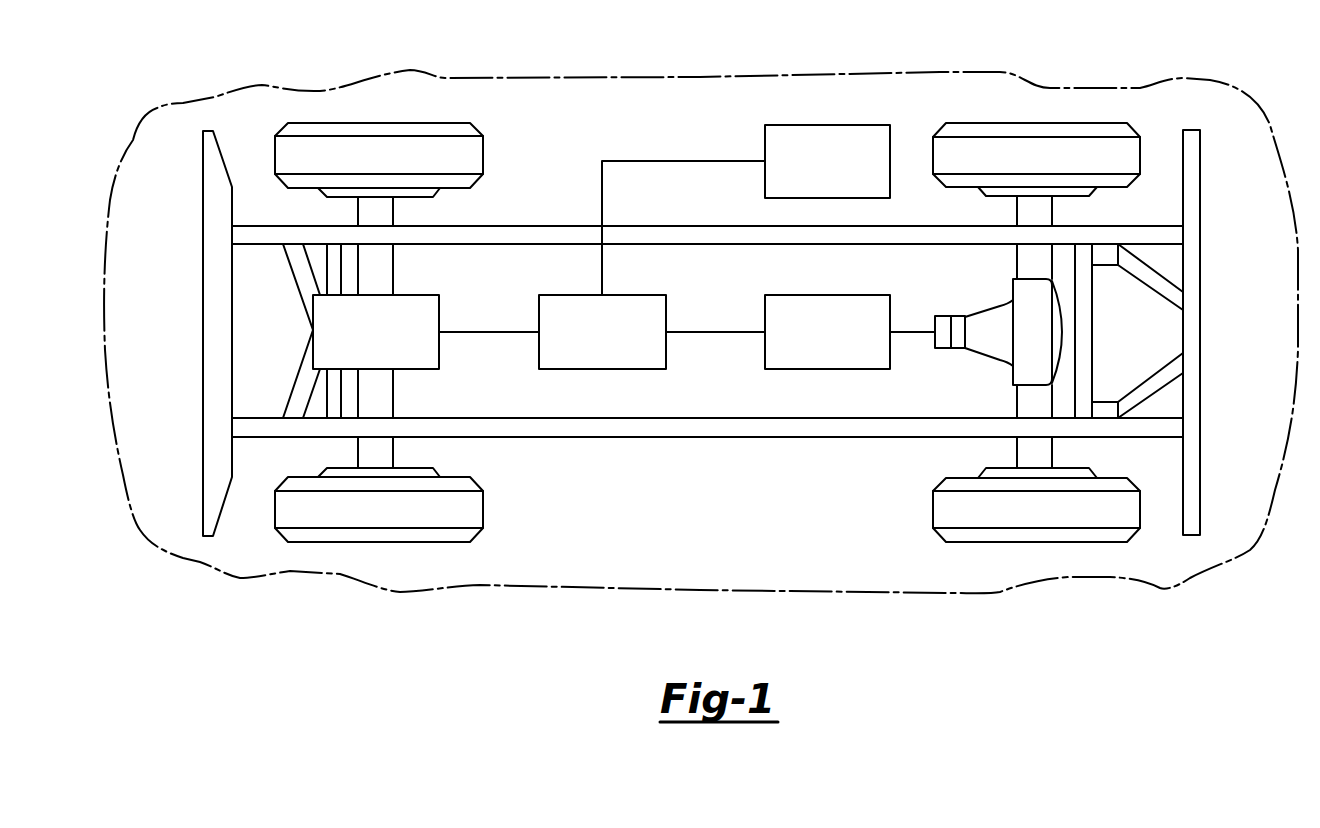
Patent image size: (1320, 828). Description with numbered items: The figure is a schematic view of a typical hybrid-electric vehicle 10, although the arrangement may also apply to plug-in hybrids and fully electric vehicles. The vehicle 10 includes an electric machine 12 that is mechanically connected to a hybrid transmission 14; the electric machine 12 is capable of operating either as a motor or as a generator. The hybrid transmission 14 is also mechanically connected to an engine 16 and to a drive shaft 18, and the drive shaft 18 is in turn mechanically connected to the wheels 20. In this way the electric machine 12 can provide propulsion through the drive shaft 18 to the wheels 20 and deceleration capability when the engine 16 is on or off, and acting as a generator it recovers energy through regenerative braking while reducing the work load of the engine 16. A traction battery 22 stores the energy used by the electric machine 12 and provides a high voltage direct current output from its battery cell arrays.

The hybrid-electric vehicle 10 is at (1112, 618).
The electric machine 12 is at (600, 369).
The hybrid transmission 14 is at (826, 369).
The engine 16 is at (413, 369).
The drive shaft 18 is at (976, 328).
The wheels 20 is at (1022, 123).
The traction battery 22 is at (765, 140).